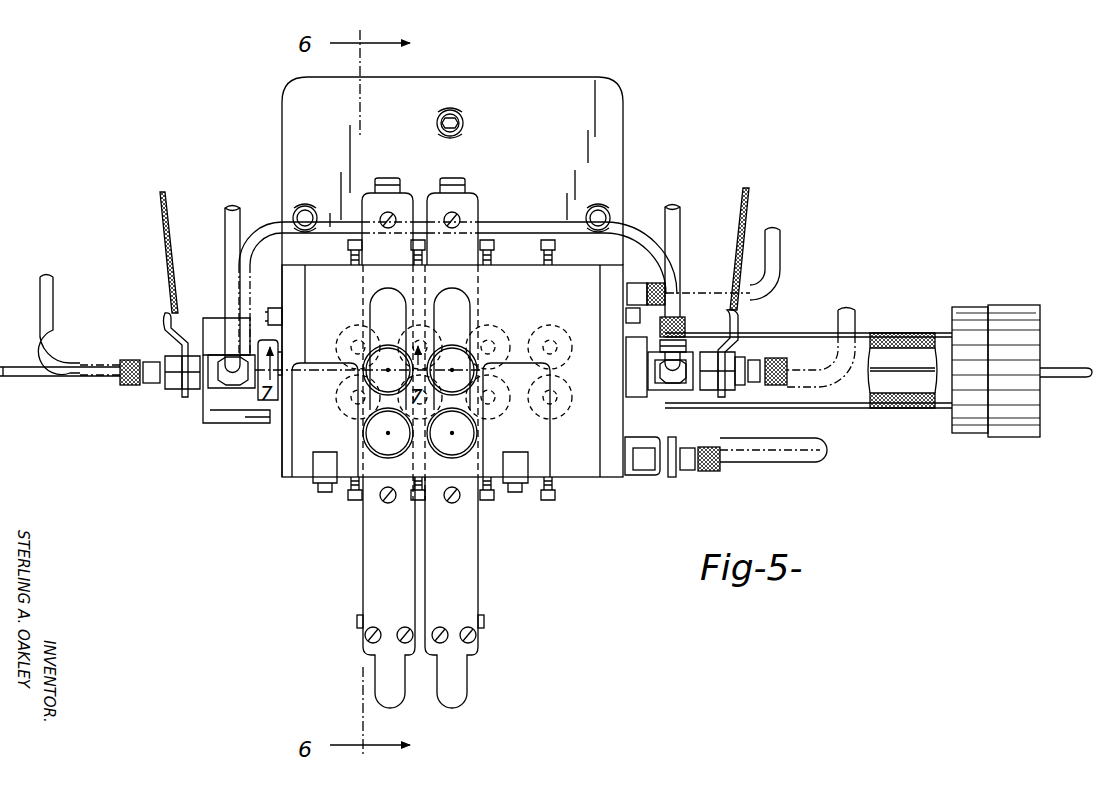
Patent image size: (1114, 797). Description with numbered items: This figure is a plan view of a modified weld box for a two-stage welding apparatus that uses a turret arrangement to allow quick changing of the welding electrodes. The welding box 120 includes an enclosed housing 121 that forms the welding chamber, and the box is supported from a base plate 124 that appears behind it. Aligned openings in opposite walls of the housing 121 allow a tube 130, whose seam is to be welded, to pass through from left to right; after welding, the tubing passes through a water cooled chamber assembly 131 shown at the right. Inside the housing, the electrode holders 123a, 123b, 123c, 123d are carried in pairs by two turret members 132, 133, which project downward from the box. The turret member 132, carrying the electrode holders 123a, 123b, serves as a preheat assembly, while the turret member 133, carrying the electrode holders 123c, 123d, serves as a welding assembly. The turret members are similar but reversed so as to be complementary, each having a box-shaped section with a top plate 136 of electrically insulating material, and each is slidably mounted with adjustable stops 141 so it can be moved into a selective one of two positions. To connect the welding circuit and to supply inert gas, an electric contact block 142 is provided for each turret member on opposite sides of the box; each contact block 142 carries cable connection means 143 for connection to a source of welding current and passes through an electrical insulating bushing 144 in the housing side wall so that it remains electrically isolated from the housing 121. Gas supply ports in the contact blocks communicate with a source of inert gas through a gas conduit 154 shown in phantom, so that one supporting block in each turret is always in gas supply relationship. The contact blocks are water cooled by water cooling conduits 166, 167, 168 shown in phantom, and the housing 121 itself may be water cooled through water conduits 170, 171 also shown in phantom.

The welding box 120 is at (278, 468).
The enclosed housing 121 is at (283, 446).
The electrode holder 123a is at (362, 366).
The electrode holder 123b is at (362, 427).
The electrode holder 123c is at (463, 345).
The electrode holder 123d is at (478, 421).
The base plate 124 is at (623, 140).
The tube 130 is at (13, 380).
The water cooled chamber assembly 131 is at (930, 303).
The turret member 132 is at (362, 597).
The turret member 133 is at (479, 580).
The top plate 136 is at (383, 562).
The adjustable stops 141 is at (405, 158).
The electric contact block 142 is at (228, 396).
The cable connection means 143 is at (183, 396).
The electrical insulating bushing 144 is at (268, 416).
The gas conduit 154 is at (55, 306).
The water cooling conduit 166 is at (223, 238).
The water cooling conduit 167 is at (267, 222).
The water cooling conduit 168 is at (683, 222).
The water conduit 170 is at (780, 246).
The water conduit 171 is at (800, 472).